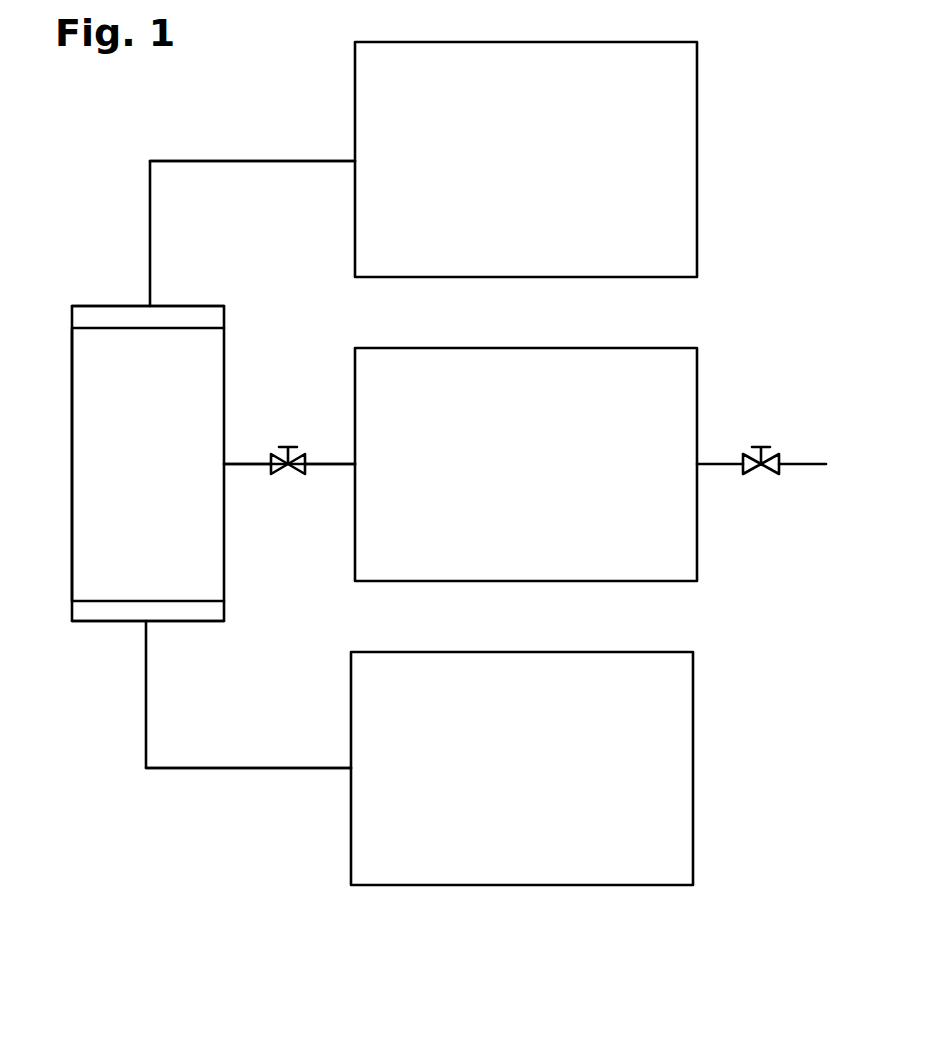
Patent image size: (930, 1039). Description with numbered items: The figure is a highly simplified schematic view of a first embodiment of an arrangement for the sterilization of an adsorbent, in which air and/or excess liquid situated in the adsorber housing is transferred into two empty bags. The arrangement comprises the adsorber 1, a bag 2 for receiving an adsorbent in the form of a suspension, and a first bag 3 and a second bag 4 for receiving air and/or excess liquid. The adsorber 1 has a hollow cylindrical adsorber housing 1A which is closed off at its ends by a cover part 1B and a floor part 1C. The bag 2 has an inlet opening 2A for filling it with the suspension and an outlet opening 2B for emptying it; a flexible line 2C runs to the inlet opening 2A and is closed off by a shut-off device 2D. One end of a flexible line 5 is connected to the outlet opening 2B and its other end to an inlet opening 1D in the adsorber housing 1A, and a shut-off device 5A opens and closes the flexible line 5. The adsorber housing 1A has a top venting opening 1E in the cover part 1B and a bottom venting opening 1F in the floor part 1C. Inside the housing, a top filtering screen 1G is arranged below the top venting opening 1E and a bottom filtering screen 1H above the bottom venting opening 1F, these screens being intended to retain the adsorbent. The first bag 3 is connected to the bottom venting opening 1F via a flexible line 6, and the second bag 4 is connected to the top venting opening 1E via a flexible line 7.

The adsorber 1 is at (66, 428).
The adsorber housing 1A is at (72, 387).
The cover part 1B is at (102, 306).
The floor part 1C is at (98, 622).
The inlet opening 1D is at (227, 467).
The top venting opening 1E is at (150, 306).
The bottom venting opening 1F is at (147, 622).
The top filtering screen 1G is at (98, 328).
The bottom filtering screen 1H is at (98, 601).
The bag for receiving the adsorbent 2 is at (712, 504).
The inlet opening 2A is at (698, 462).
The outlet opening 2B is at (352, 467).
The flexible line 2C is at (812, 462).
The shut-off device 2D is at (768, 455).
The first bag 3 is at (711, 766).
The second bag 4 is at (714, 159).
The flexible line 5 is at (250, 464).
The shut-off device 5A is at (295, 452).
The flexible line 6 is at (302, 768).
The flexible line 7 is at (303, 161).